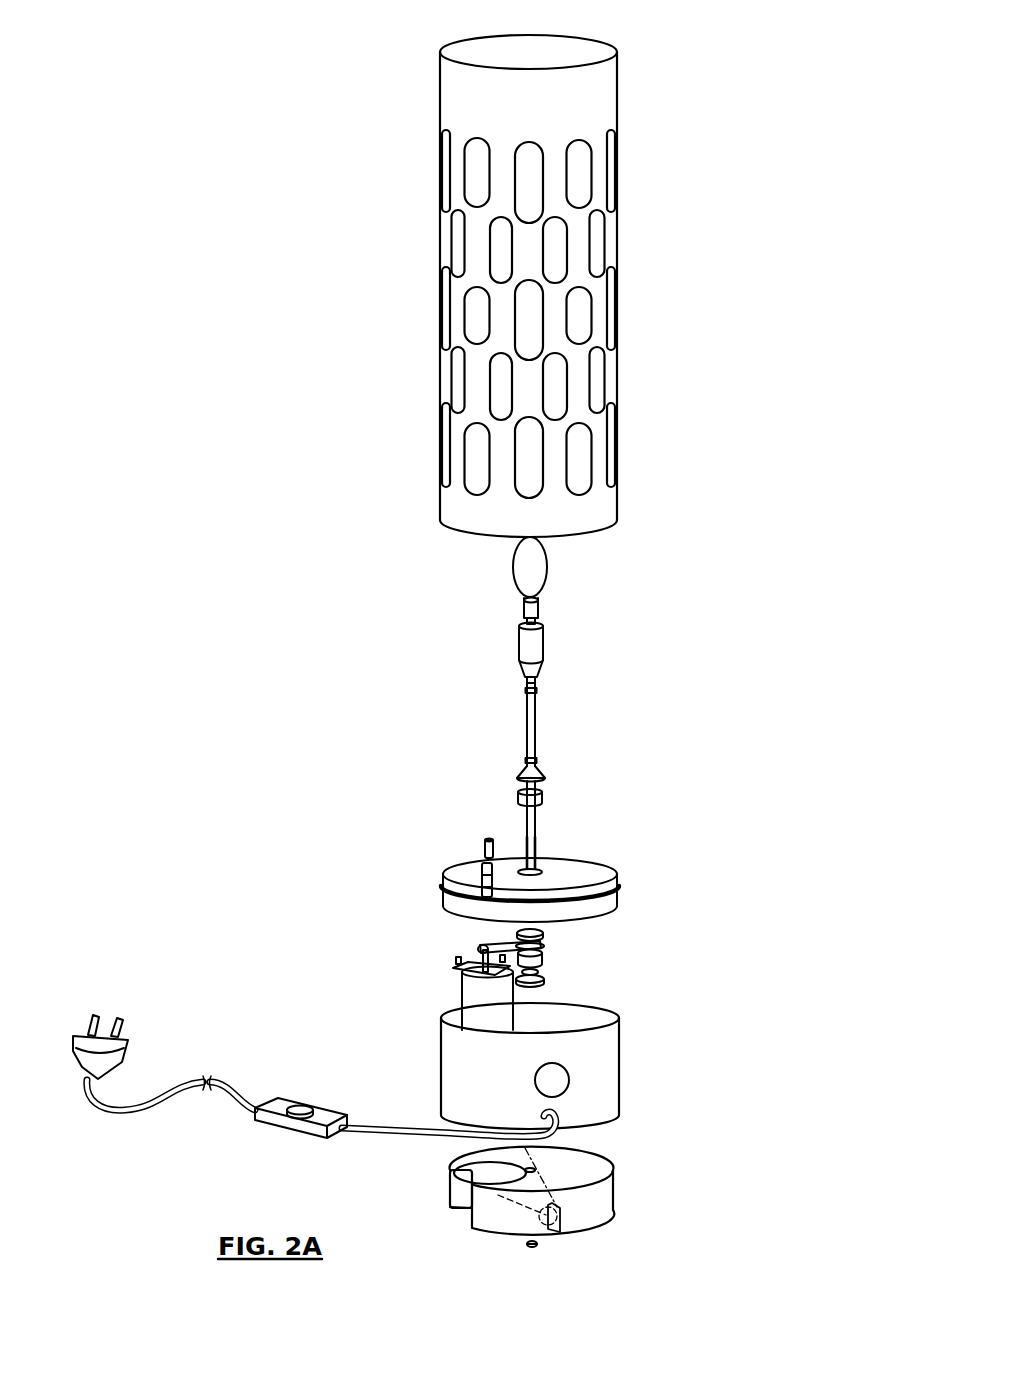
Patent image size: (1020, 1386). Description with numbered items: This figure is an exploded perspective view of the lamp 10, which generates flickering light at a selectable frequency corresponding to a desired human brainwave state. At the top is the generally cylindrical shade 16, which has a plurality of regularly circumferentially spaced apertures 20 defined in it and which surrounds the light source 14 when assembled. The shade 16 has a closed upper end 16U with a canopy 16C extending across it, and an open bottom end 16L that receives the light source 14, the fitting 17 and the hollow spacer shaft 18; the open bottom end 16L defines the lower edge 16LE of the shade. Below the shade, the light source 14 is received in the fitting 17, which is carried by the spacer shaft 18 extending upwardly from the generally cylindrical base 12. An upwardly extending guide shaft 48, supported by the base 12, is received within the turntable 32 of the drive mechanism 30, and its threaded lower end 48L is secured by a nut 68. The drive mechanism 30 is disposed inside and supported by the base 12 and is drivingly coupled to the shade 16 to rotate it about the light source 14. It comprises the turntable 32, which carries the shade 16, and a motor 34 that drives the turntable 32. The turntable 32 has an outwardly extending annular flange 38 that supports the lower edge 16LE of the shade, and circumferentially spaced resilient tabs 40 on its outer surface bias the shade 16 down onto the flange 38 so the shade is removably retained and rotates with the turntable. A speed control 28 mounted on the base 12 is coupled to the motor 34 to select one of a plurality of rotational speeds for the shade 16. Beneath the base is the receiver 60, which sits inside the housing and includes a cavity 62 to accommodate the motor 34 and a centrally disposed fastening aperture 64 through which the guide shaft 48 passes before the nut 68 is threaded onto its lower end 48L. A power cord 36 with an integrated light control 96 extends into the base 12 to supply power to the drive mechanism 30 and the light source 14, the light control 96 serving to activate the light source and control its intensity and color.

The lamp 10 is at (310, 488).
The base 12 is at (630, 1052).
The light source 14 is at (548, 577).
The shade 16 is at (628, 255).
The closed upper end 16U is at (426, 40).
The open bottom end 16L is at (470, 542).
The canopy 16C is at (567, 52).
The lower edge 16LE is at (609, 536).
The fitting 17 is at (545, 648).
The hollow spacer shaft 18 is at (533, 728).
The apertures 20 is at (478, 163).
The speed control 28 is at (549, 1068).
The drive mechanism 30 is at (415, 937).
The turntable 32 is at (630, 881).
The motor 34 is at (466, 995).
The power cord 36 is at (378, 1126).
The outwardly extending annular flange 38 is at (590, 904).
The resilient tabs 40 is at (487, 860).
The guide shaft 48 is at (537, 812).
The threaded lower end 48L is at (544, 848).
The receiver 60 is at (606, 1197).
The cavity 62 is at (443, 1186).
The fastening aperture 64 is at (536, 1168).
The nut 68 is at (538, 1245).
The light control 96 is at (298, 1107).